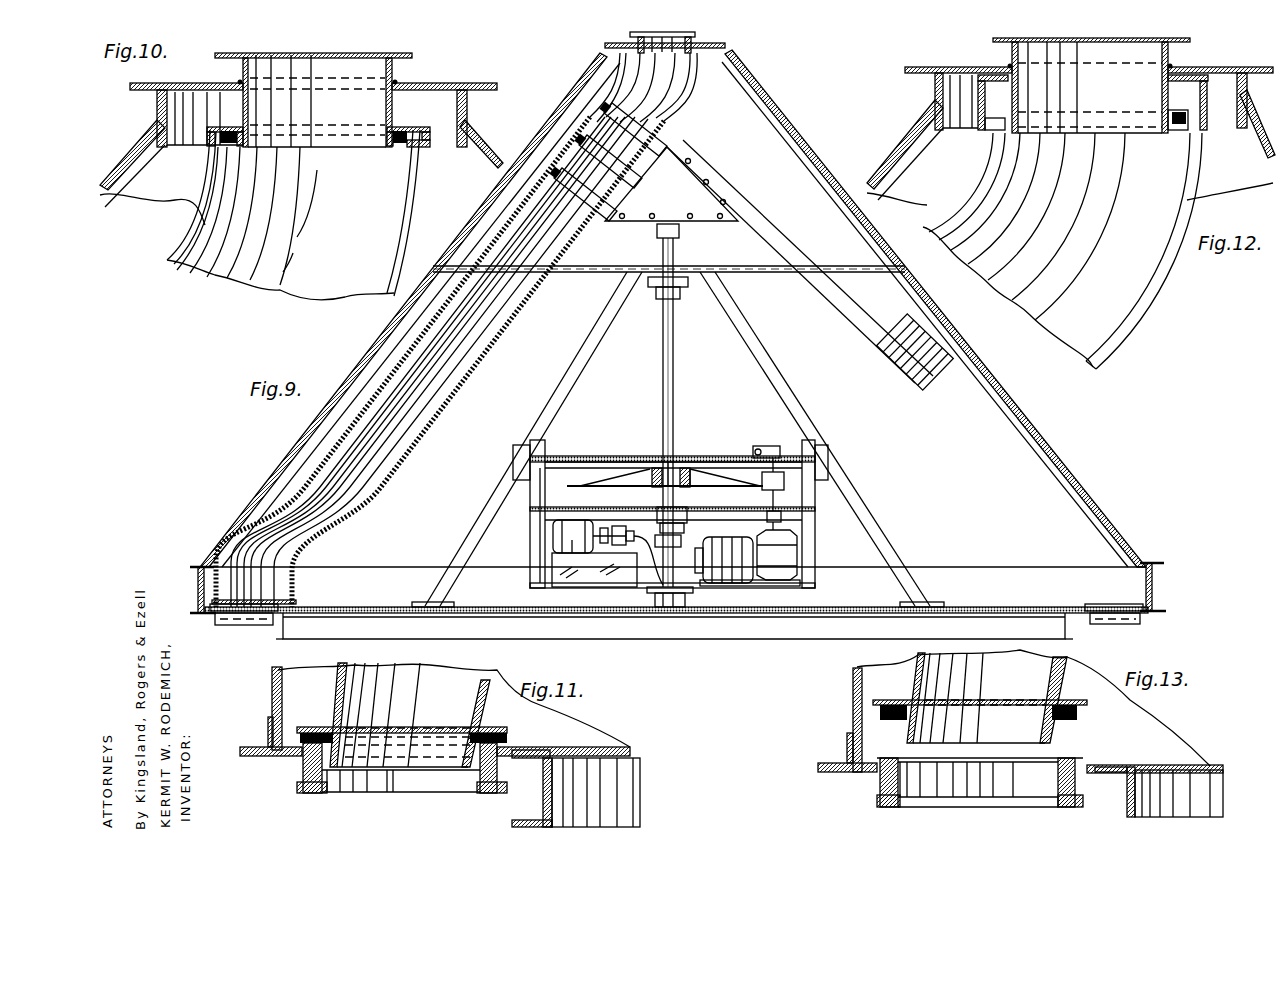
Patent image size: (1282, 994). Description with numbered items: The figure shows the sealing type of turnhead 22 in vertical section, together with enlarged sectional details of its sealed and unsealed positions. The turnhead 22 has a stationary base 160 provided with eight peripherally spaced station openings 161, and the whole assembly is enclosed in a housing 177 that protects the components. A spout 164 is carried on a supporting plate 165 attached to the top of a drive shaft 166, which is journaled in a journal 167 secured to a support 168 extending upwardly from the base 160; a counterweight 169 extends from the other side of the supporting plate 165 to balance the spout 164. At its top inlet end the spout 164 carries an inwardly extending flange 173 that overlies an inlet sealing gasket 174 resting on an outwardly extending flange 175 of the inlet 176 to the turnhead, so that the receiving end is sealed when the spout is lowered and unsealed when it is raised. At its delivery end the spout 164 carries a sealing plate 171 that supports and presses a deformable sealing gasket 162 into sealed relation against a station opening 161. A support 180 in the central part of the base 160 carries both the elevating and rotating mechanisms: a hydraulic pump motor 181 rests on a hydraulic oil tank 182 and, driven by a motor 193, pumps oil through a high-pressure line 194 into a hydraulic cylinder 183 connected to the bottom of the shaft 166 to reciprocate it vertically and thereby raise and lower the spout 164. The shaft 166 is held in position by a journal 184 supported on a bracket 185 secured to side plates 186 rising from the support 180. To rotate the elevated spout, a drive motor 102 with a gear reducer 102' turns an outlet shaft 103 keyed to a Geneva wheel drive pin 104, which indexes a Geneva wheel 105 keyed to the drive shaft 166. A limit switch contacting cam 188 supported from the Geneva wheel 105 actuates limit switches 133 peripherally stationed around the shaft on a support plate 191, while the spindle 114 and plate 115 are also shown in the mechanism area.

In FIG. 9, the turnhead 22 is at (1072, 419).
In FIG. 9, the drive motor 102 is at (745, 602).
In FIG. 9, the gear reducer 102' is at (810, 565).
In FIG. 9, the outlet shaft 103 is at (783, 500).
In FIG. 9, the Geneva wheel drive pin 104 is at (785, 480).
In FIG. 9, the Geneva wheel 105 is at (703, 480).
In FIG. 9, the spindle 114 is at (680, 467).
In FIG. 9, the plate 115 is at (580, 488).
In FIG. 9, the limit switches 133 is at (785, 445).
In FIG. 9, the stationary base 160 is at (862, 638).
In FIG. 11, the stationary base 160 is at (638, 746).
In FIG. 13, the stationary base 160 is at (1175, 760).
In FIG. 9, the station openings 161 is at (237, 632).
In FIG. 11, the station openings 161 is at (380, 775).
In FIG. 13, the station openings 161 is at (920, 793).
In FIG. 9, the sealing gasket 162 is at (276, 600).
In FIG. 11, the sealing gasket 162 is at (508, 737).
In FIG. 13, the sealing gasket 162 is at (1080, 717).
In FIG. 9, the spout 164 is at (333, 460).
In FIG. 10, the spout 164 is at (223, 282).
In FIG. 12, the spout 164 is at (1105, 321).
In FIG. 11, the spout 164 is at (432, 750).
In FIG. 13, the spout 164 is at (1035, 680).
In FIG. 9, the supporting plate 165 is at (625, 224).
In FIG. 9, the drive shaft 166 is at (676, 338).
In FIG. 9, the journal 167 is at (657, 296).
In FIG. 9, the support 168 is at (581, 276).
In FIG. 9, the counterweight 169 is at (936, 386).
In FIG. 9, the sealing plate 171 is at (207, 603).
In FIG. 11, the sealing plate 171 is at (333, 717).
In FIG. 13, the sealing plate 171 is at (870, 697).
In FIG. 9, the inwardly extending flange 173 is at (686, 72).
In FIG. 10, the inwardly extending flange 173 is at (233, 83).
In FIG. 12, the inwardly extending flange 173 is at (1185, 75).
In FIG. 10, the inlet sealing gasket 174 is at (207, 141).
In FIG. 12, the inlet sealing gasket 174 is at (1185, 118).
In FIG. 10, the outwardly extending flange 175 is at (215, 150).
In FIG. 12, the outwardly extending flange 175 is at (1178, 140).
In FIG. 9, the inlet 176 is at (672, 106).
In FIG. 10, the inlet 176 is at (352, 56).
In FIG. 12, the inlet 176 is at (1128, 140).
In FIG. 9, the housing 177 is at (362, 356).
In FIG. 10, the housing 177 is at (482, 125).
In FIG. 12, the housing 177 is at (920, 127).
In FIG. 9, the support 180 is at (760, 596).
In FIG. 9, the hydraulic pump motor 181 is at (570, 531).
In FIG. 9, the hydraulic oil tank 182 is at (612, 573).
In FIG. 9, the hydraulic cylinder 183 is at (655, 590).
In FIG. 9, the journal 184 is at (660, 510).
In FIG. 9, the bracket 185 is at (557, 507).
In FIG. 9, the side plates 186 is at (530, 543).
In FIG. 9, the limit switch contacting cam 188 is at (760, 447).
In FIG. 9, the support plate 191 is at (605, 456).
In FIG. 9, the motor 193 is at (573, 540).
In FIG. 9, the high-pressure line 194 is at (658, 563).